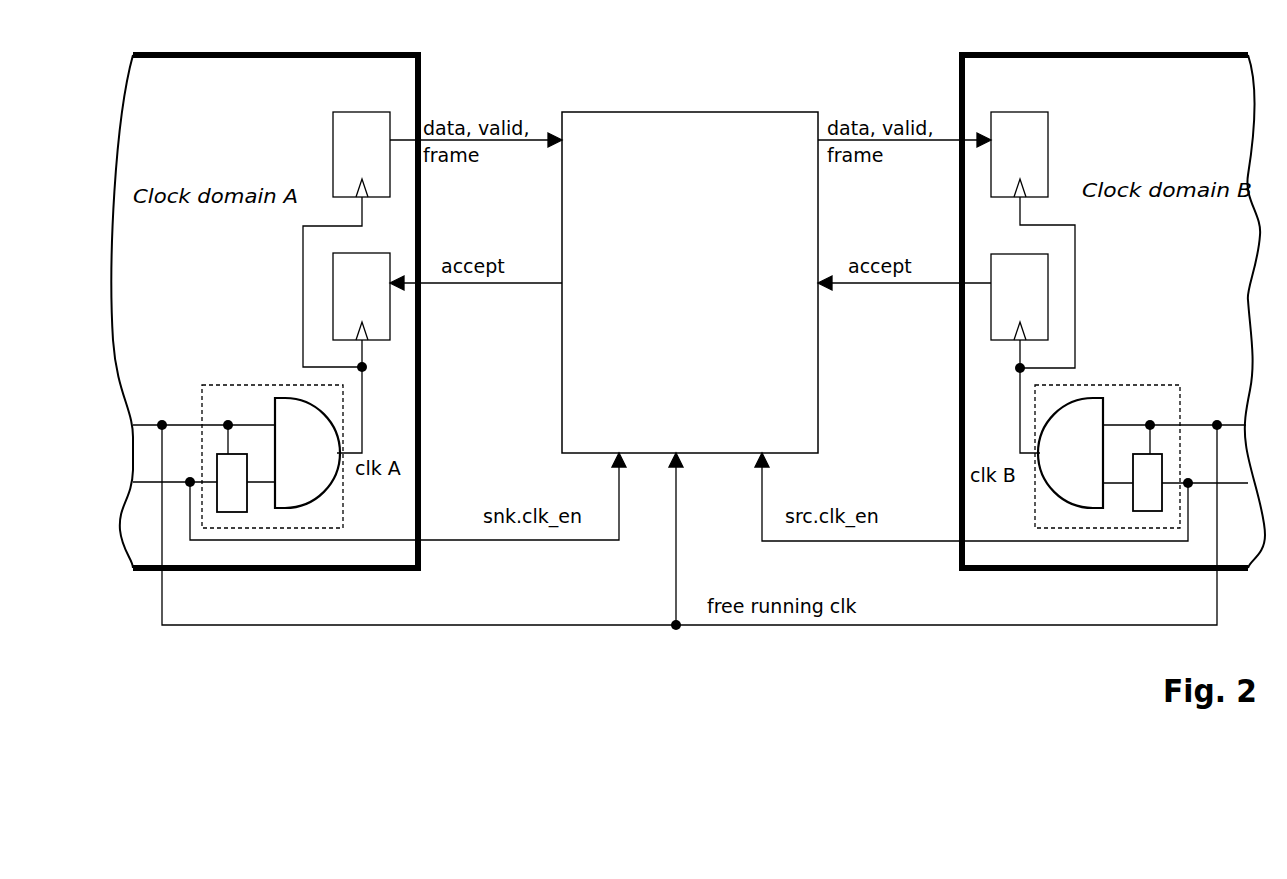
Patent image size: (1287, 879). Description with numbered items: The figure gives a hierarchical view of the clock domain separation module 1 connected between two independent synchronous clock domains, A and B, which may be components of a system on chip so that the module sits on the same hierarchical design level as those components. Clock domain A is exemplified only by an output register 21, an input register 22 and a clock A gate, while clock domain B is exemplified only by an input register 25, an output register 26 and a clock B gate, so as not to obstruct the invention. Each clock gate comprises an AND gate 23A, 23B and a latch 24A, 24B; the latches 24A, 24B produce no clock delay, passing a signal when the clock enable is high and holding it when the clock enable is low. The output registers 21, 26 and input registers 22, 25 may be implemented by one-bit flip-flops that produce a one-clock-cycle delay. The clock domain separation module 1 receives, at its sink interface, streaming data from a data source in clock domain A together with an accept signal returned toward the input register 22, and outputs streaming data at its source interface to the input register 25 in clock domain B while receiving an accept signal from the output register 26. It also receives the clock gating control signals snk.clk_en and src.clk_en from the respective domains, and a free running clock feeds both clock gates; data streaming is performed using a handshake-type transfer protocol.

The clock domain separation module 1 is at (702, 107).
The output register 21 is at (332, 128).
The input register 22 is at (332, 300).
The AND gate 23A is at (303, 482).
The latch 24A is at (213, 466).
The input register 25 is at (1050, 132).
The output register 26 is at (1050, 290).
The AND gate 23B is at (1068, 493).
The latch 24B is at (1157, 473).